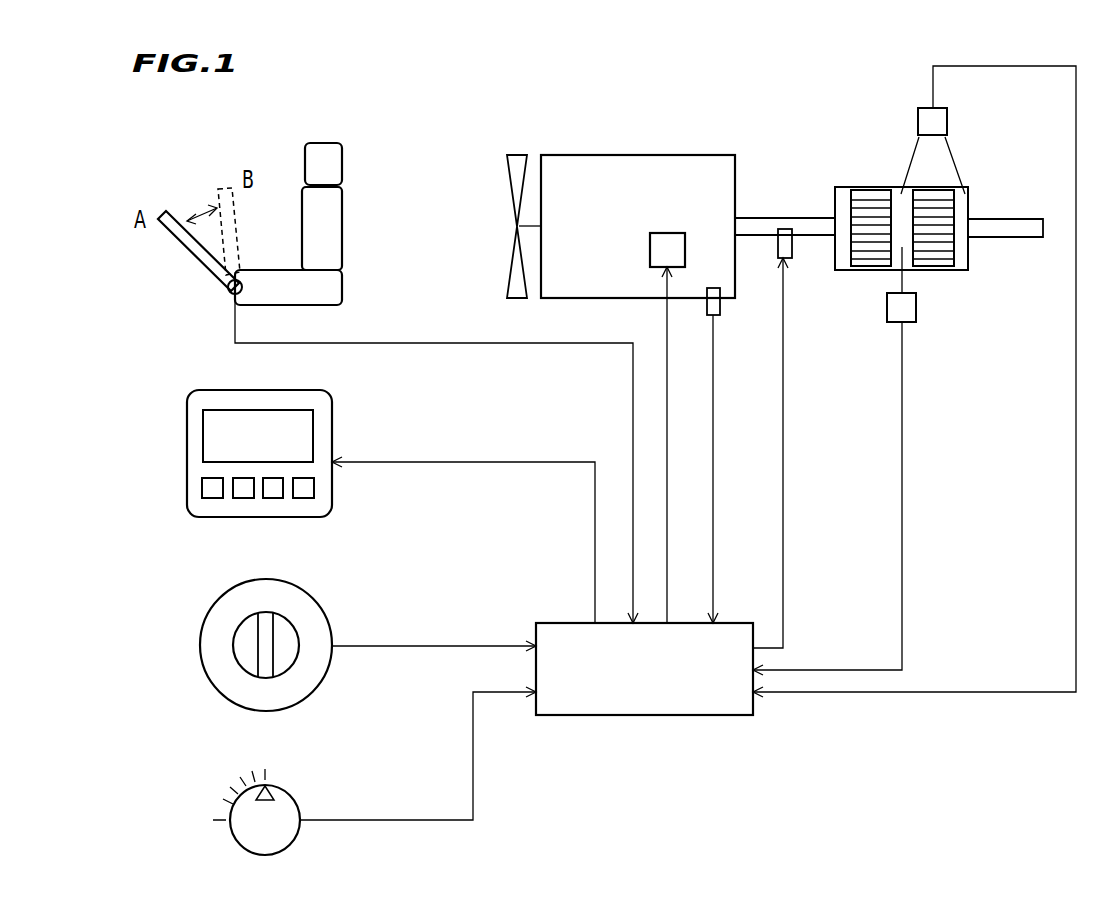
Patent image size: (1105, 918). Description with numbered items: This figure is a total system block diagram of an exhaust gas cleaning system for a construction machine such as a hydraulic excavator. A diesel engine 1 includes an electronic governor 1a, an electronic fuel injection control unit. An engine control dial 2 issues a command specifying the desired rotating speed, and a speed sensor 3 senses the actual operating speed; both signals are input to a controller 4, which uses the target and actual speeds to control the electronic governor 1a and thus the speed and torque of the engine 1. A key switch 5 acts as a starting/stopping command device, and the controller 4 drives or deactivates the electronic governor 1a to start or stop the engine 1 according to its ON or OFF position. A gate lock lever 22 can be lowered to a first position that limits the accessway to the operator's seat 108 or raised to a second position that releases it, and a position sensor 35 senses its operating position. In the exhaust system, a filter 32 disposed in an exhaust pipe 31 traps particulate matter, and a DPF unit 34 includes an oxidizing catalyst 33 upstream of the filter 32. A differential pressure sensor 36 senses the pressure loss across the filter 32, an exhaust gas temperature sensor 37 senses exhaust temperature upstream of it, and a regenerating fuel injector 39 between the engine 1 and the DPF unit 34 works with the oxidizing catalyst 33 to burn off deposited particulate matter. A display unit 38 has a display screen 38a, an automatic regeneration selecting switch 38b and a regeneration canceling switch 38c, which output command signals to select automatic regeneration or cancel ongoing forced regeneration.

The diesel engine 1 is at (640, 155).
The electronic governor 1a is at (660, 233).
The engine control dial 2 is at (230, 835).
The speed sensor 3 is at (720, 308).
The controller 4 is at (645, 715).
The key switch 5 is at (198, 648).
The gate lock lever 22 is at (187, 253).
The exhaust pipe 31 is at (1010, 219).
The filter 32 is at (945, 255).
The oxidizing catalyst 33 is at (863, 200).
The DPF unit 34 is at (890, 178).
The position sensor 35 is at (230, 292).
The differential pressure sensor 36 is at (948, 120).
The exhaust gas temperature sensor 37 is at (917, 305).
The display unit 38 is at (333, 413).
The display screen 38a is at (202, 437).
The automatic regeneration selecting switch 38b is at (202, 487).
The regeneration canceling switch 38c is at (243, 498).
The regenerating fuel injector 39 is at (793, 247).
The operator's seat 108 is at (335, 218).